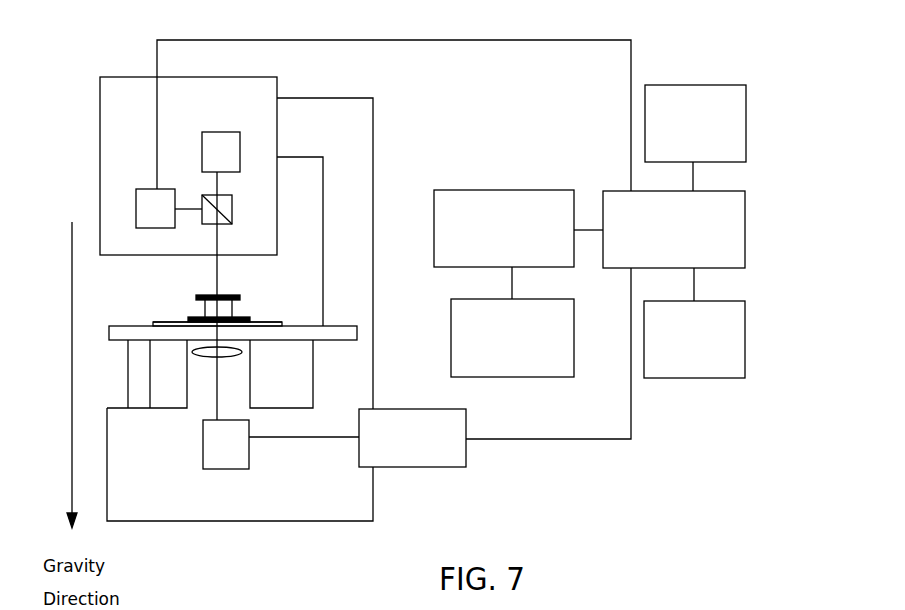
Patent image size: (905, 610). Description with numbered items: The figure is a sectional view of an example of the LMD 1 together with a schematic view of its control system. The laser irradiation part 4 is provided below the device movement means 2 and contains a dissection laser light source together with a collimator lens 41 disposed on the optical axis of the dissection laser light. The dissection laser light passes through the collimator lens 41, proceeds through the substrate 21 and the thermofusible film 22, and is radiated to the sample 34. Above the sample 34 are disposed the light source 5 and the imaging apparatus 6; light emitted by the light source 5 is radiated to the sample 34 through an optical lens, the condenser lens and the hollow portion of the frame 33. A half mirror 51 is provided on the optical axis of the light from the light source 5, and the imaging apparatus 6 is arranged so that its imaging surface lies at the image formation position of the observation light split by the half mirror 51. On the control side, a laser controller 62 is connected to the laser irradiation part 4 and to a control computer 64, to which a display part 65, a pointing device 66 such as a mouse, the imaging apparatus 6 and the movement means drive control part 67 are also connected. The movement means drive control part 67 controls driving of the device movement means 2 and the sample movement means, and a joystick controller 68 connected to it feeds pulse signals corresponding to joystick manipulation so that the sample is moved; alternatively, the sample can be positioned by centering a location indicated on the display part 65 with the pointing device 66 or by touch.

The LMD 1 is at (393, 172).
The device movement means 2 is at (357, 333).
The laser irradiation part 4 is at (200, 459).
The light source 5 is at (222, 131).
The imaging apparatus 6 is at (169, 188).
The substrate 21 is at (160, 323).
The thermofusible film 22 is at (191, 318).
The frame 33 is at (250, 296).
The sample 34 is at (238, 318).
The collimator lens 41 is at (212, 358).
The half mirror 51 is at (234, 211).
The laser controller 62 is at (437, 469).
The control computer 64 is at (747, 216).
The display part 65 is at (748, 125).
The pointing device 66 is at (747, 334).
The movement means drive control part 67 is at (539, 188).
The joystick controller 68 is at (532, 379).